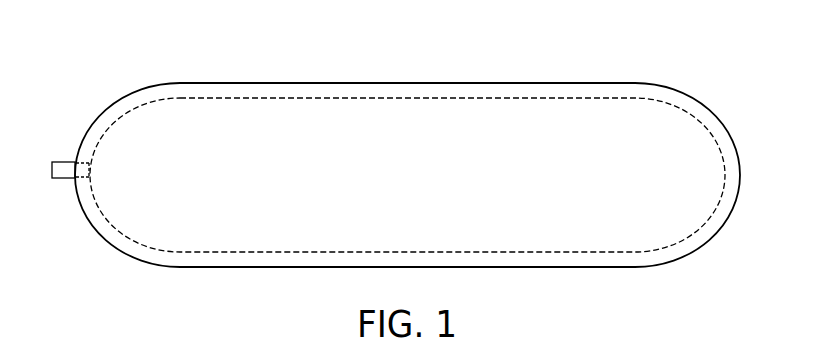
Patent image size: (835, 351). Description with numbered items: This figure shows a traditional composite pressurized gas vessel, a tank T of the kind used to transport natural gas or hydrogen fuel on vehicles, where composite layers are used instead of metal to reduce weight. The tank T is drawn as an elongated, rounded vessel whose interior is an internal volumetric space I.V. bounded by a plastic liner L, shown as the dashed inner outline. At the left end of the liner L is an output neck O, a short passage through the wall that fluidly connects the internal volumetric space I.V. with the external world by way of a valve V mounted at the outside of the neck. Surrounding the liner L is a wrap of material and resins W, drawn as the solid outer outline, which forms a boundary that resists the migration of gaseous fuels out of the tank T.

The tank T is at (437, 140).
The material and resins W is at (400, 84).
The plastic liner L is at (527, 98).
The internal volumetric space I.V. is at (332, 175).
The output neck O is at (73, 138).
The valve V is at (64, 178).